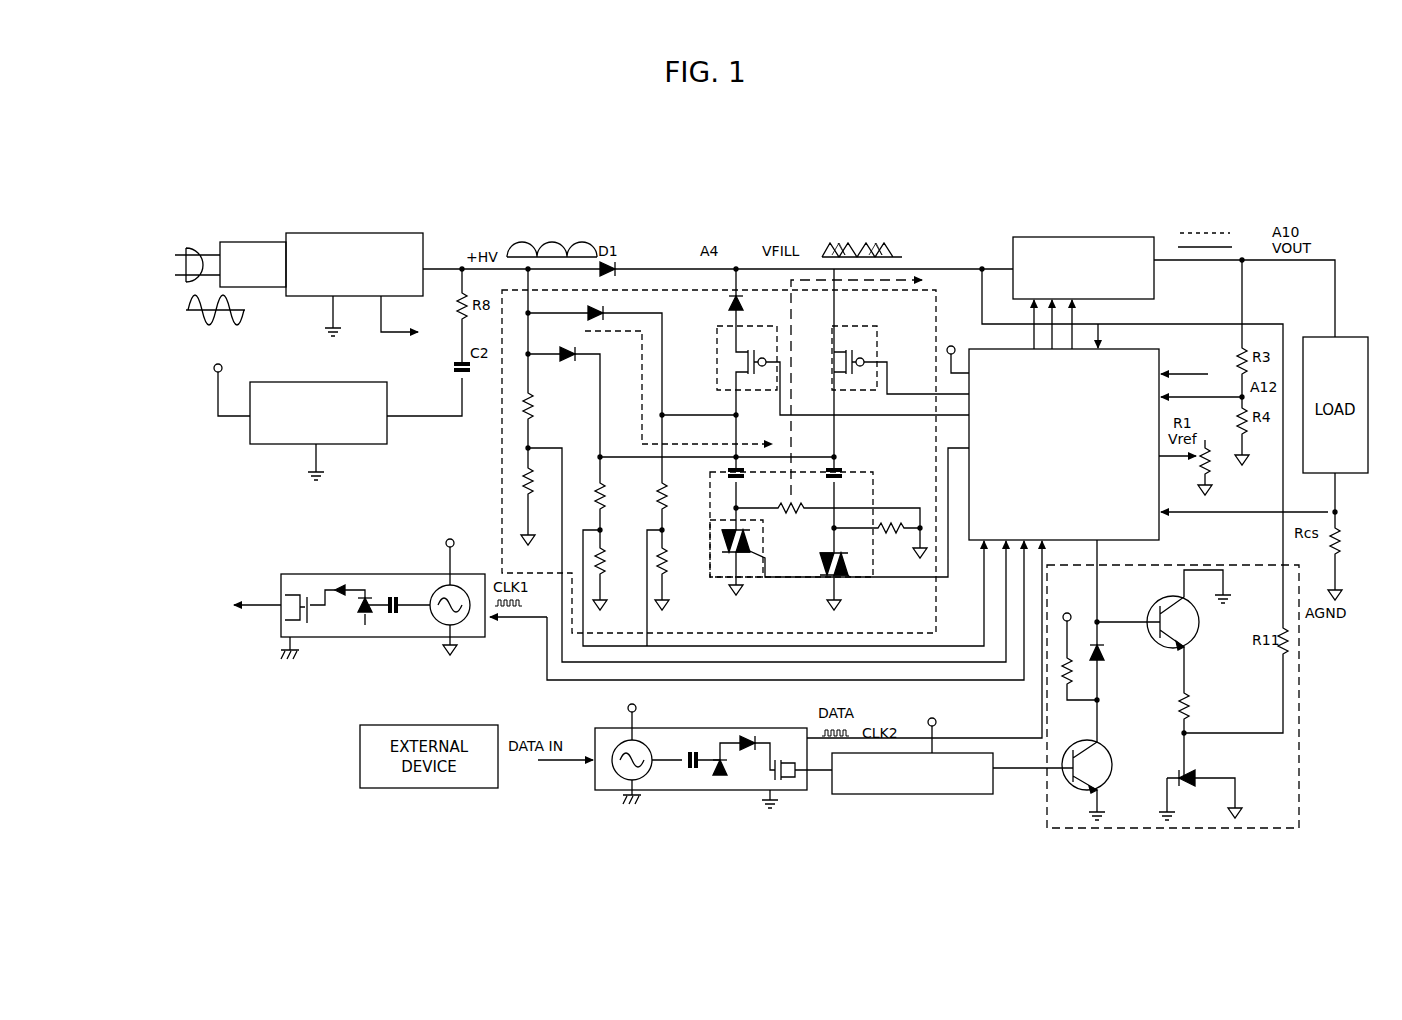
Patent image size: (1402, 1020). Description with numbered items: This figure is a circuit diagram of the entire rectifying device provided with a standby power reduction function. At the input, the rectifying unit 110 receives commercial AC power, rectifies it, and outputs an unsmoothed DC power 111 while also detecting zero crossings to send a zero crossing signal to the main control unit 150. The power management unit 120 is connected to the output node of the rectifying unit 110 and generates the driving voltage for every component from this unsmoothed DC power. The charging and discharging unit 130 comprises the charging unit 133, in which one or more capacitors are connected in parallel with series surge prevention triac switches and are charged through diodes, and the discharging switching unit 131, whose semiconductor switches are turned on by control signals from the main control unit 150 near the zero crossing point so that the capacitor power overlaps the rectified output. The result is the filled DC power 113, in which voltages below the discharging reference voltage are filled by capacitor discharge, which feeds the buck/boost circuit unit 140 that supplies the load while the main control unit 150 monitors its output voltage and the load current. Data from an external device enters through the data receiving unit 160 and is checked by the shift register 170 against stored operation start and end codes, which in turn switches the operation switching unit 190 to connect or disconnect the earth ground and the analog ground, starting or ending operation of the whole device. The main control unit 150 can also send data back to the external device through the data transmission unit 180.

The rectifying unit 110 is at (408, 233).
The unsmoothed DC power 111 is at (580, 243).
The filled DC power waveform 113 is at (900, 243).
The power management unit 120 is at (370, 382).
The charging and discharging unit 130 is at (665, 286).
The discharging switching unit 131 is at (708, 572).
The charging unit 133 is at (855, 472).
The buck/boost circuit unit 140 is at (1118, 237).
The main control unit 150 is at (1138, 349).
The data receiving unit 160 is at (788, 790).
The shift register 170 is at (965, 794).
The data transmission unit 180 is at (301, 573).
The operation switching unit 190 is at (1265, 828).